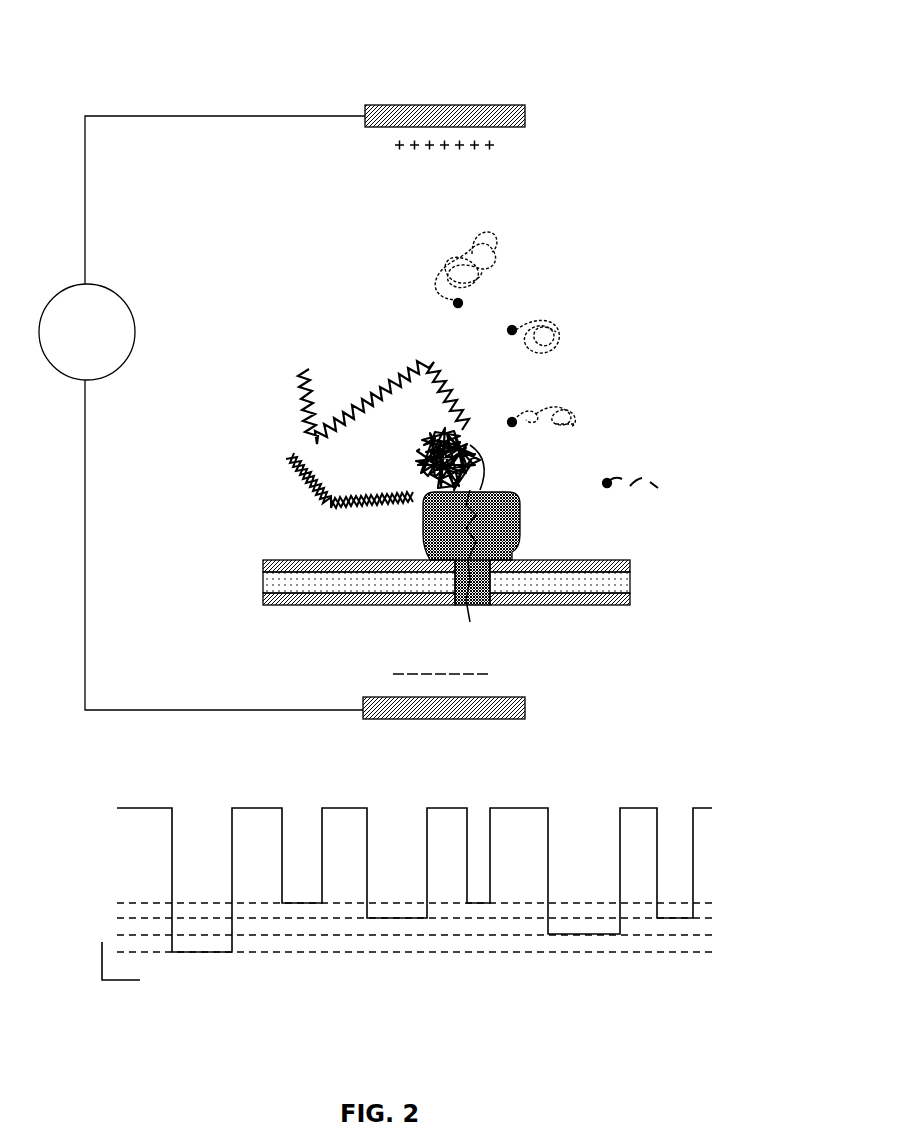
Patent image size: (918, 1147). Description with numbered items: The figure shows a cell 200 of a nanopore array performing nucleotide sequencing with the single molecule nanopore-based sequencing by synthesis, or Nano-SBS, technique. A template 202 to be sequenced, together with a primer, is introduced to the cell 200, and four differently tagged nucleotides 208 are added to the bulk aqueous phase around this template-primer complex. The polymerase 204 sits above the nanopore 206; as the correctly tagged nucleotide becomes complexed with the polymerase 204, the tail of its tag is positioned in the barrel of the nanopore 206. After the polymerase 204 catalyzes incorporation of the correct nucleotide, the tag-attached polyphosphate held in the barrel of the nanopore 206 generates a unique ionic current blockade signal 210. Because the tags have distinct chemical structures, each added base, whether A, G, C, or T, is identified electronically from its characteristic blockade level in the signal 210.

The cell 200 is at (143, 42).
The template 202 is at (297, 387).
The polymerase 204 is at (411, 463).
The nanopore 206 is at (422, 538).
The tagged nucleotides 208 is at (697, 247).
The ionic current blockade signal 210 is at (748, 846).